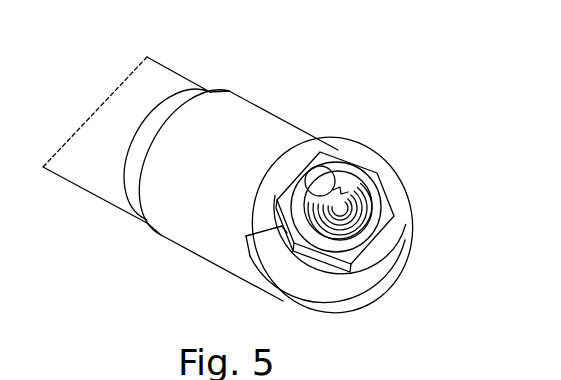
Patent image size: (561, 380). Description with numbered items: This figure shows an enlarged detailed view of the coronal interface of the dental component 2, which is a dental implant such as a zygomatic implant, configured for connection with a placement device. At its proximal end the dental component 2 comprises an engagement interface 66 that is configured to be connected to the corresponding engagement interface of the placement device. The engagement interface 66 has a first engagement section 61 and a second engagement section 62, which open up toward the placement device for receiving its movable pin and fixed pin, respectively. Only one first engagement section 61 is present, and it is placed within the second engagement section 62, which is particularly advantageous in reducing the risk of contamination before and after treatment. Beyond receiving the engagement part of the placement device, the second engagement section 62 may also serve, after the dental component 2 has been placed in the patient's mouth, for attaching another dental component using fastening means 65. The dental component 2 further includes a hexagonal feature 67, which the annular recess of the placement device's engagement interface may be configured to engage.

The dental component 2 is at (269, 89).
The first engagement section 61 is at (316, 184).
The second engagement section 62 is at (383, 202).
The fastening means 65 is at (366, 246).
The engagement interface 66 is at (438, 241).
The hexagonal feature 67 is at (291, 229).